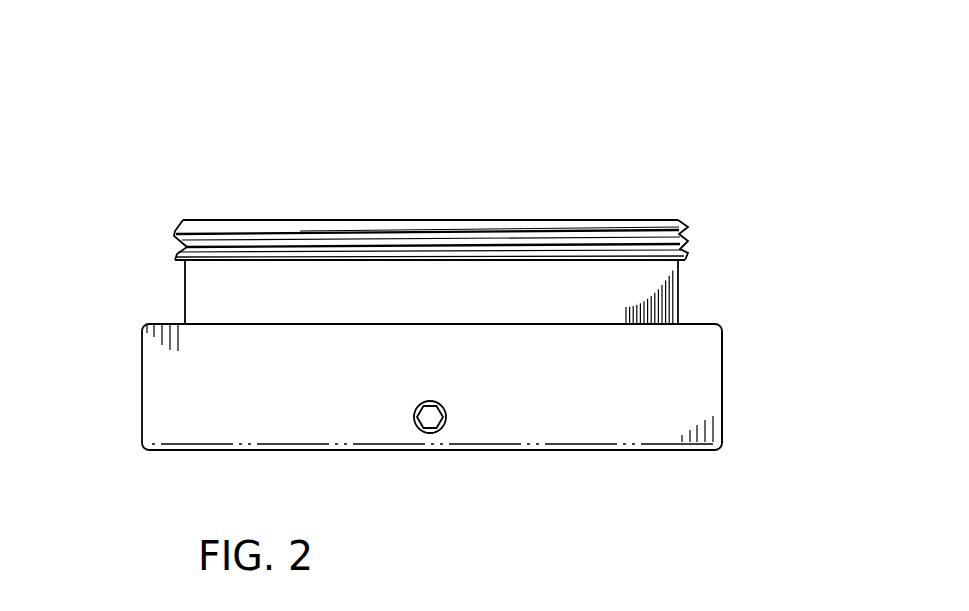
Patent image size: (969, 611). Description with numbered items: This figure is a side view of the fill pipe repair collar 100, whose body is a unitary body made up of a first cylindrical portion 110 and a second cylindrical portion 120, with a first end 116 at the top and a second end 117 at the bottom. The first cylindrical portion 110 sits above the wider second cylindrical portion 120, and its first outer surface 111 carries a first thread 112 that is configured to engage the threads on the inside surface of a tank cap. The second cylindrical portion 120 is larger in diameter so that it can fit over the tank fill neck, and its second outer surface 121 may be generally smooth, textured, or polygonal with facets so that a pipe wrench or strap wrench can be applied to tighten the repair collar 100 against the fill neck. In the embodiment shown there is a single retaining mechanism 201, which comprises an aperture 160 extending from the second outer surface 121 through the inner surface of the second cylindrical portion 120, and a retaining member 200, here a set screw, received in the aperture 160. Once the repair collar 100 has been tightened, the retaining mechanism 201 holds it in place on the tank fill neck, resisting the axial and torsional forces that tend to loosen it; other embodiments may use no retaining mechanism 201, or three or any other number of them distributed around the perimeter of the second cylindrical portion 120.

The repair collar 100 is at (691, 118).
The first cylindrical portion 110 is at (412, 219).
The first outer surface 111 is at (202, 303).
The first thread 112 is at (187, 247).
The first end 116 is at (712, 218).
The second end 117 is at (741, 454).
The second cylindrical portion 120 is at (142, 392).
The second outer surface 121 is at (667, 390).
The aperture 160 is at (438, 403).
The retaining member 200 is at (426, 420).
The retaining mechanism 201 is at (427, 456).